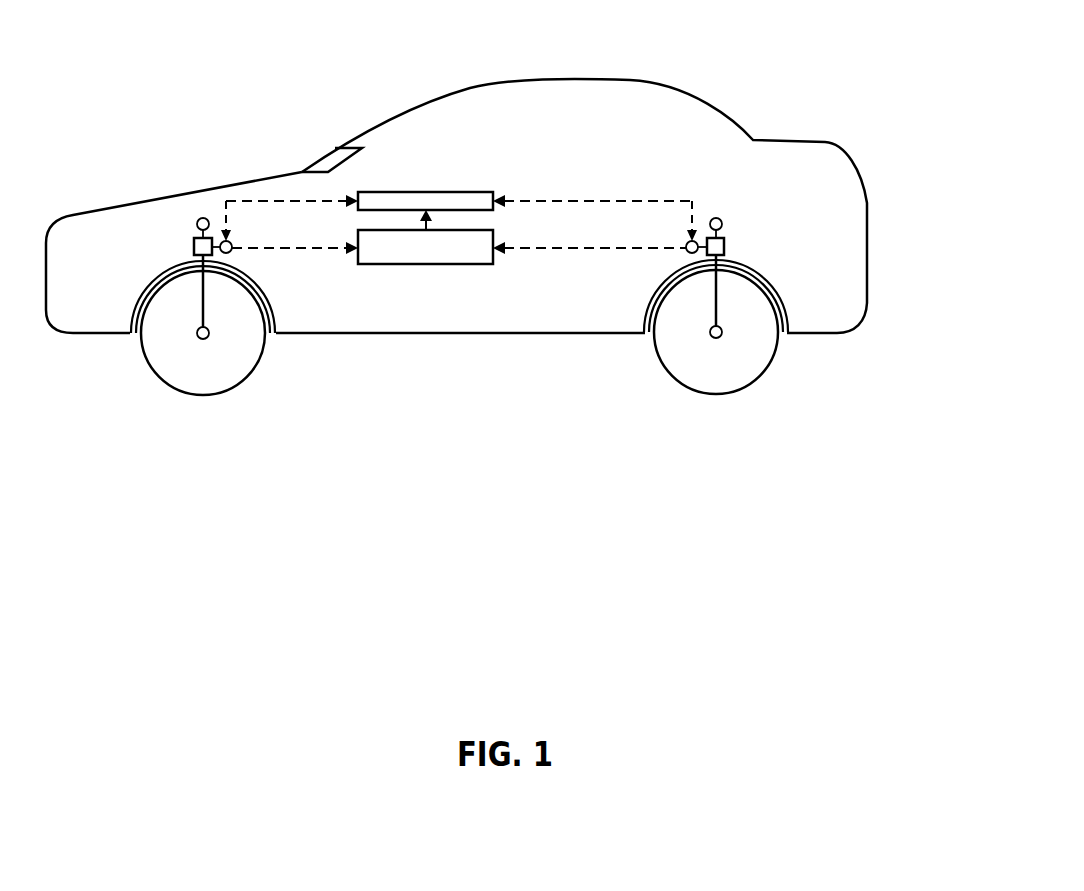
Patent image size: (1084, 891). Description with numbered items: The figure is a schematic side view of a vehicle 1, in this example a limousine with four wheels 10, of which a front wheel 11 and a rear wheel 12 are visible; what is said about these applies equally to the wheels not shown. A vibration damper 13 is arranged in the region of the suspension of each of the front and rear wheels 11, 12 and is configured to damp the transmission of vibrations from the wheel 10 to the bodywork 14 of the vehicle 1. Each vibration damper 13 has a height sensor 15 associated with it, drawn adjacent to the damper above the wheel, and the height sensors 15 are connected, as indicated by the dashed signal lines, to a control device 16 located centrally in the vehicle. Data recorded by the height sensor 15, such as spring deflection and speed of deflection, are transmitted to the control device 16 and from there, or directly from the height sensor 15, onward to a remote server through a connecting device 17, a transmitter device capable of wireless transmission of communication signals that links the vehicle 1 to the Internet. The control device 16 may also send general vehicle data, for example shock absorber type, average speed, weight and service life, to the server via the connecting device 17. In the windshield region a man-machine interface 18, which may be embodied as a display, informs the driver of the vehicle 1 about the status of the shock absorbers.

The vehicle 1 is at (837, 99).
The wheels 10 is at (179, 398).
The front wheel 11 is at (235, 375).
The rear wheel 12 is at (762, 373).
The vibration damper 13 is at (192, 256).
The bodywork 14 is at (125, 238).
The height sensor 15 is at (226, 236).
The control device 16 is at (450, 263).
The connecting device 17 is at (420, 197).
The man-machine interface 18 is at (328, 158).